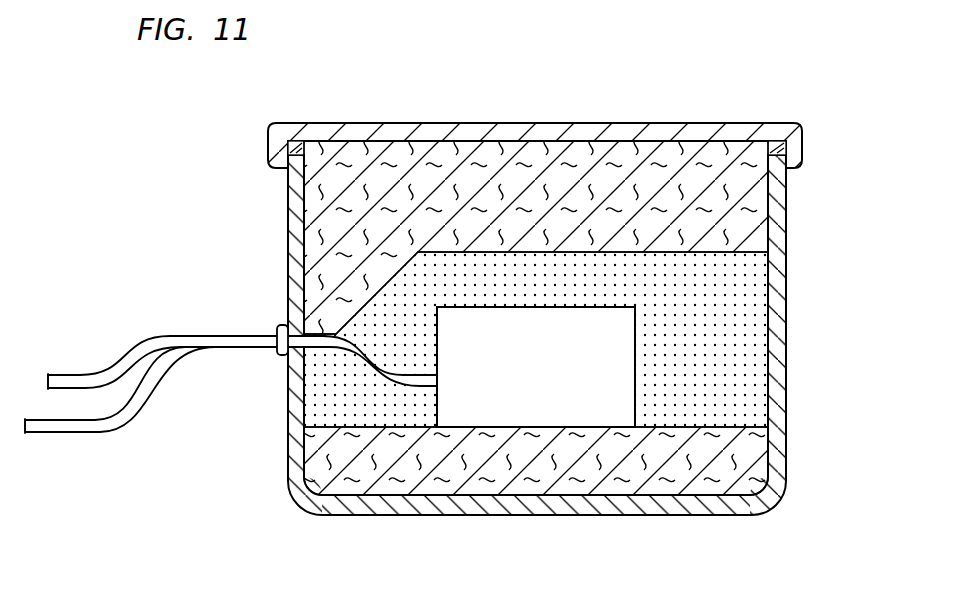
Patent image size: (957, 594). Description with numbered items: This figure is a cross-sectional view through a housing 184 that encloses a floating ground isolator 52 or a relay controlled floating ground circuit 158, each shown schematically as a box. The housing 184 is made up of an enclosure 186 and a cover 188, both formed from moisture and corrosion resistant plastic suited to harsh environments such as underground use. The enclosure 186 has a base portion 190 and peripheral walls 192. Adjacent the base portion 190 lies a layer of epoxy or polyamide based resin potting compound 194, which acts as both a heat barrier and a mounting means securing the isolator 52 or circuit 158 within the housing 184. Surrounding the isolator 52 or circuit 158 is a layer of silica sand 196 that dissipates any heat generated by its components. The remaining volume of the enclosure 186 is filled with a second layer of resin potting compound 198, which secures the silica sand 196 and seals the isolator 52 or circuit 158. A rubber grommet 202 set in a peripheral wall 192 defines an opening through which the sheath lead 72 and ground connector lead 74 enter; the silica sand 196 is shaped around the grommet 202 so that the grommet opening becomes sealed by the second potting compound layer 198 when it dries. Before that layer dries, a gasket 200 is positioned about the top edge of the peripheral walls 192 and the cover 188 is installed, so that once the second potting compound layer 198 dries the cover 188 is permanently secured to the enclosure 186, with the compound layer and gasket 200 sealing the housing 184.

The floating ground isolator 52 is at (536, 367).
The relay controlled floating ground circuit 158 is at (481, 371).
The sheath lead 72 is at (135, 347).
The ground connector lead 74 is at (145, 398).
The housing 184 is at (222, 175).
The enclosure 186 is at (255, 223).
The cover 188 is at (587, 132).
The base portion 190 is at (645, 507).
The peripheral walls 192 is at (295, 260).
The resin potting compound 194 is at (747, 463).
The silica sand 196 is at (745, 367).
The second layer of resin potting compound 198 is at (430, 140).
The gasket 200 is at (295, 140).
The rubber grommet 202 is at (280, 327).